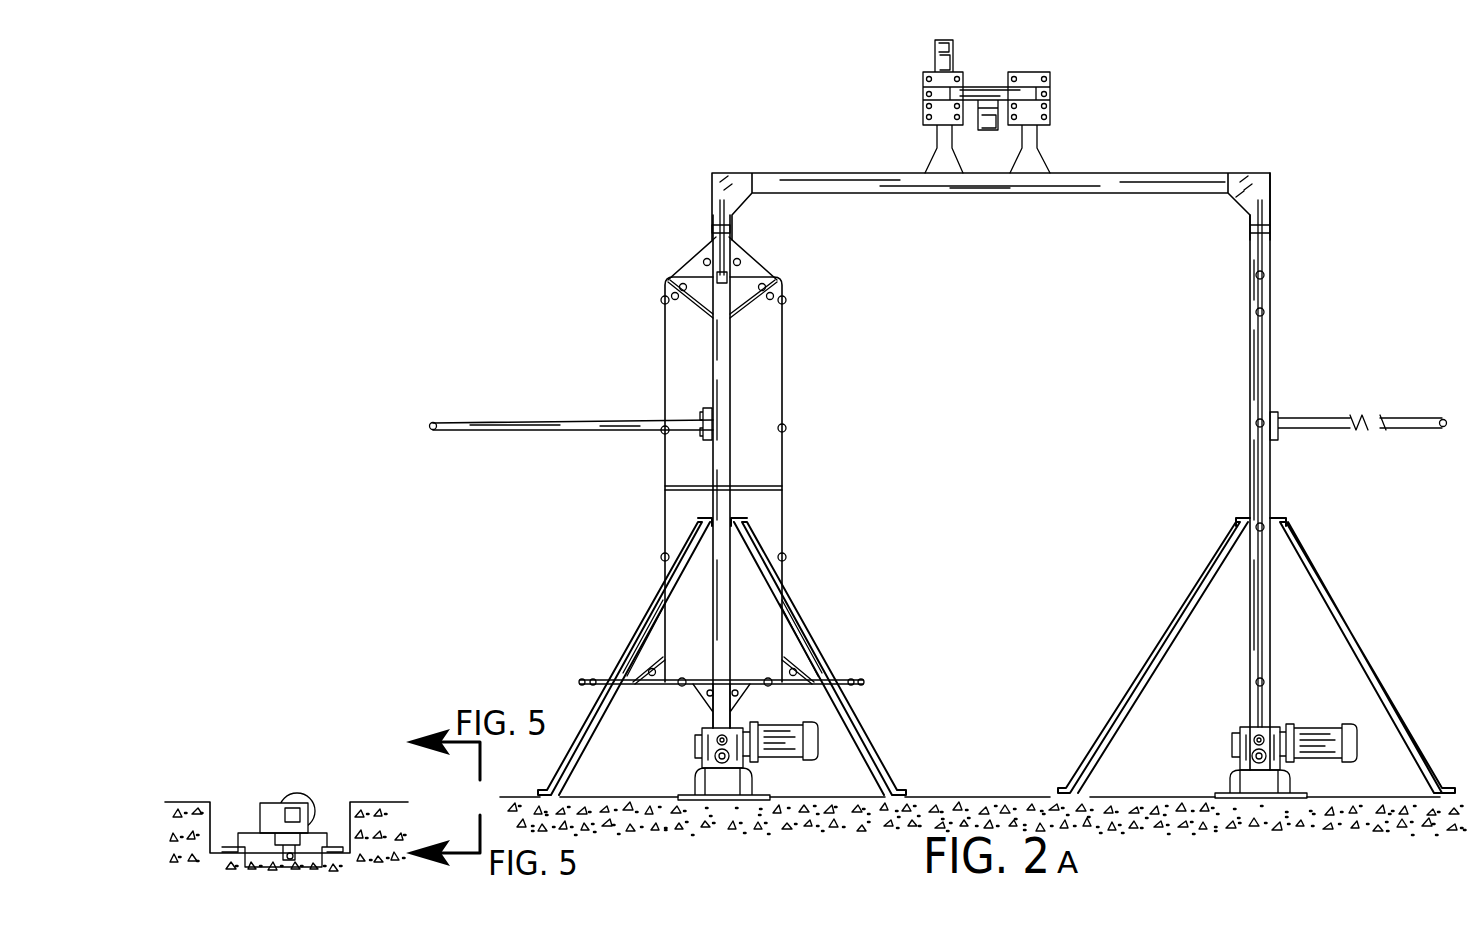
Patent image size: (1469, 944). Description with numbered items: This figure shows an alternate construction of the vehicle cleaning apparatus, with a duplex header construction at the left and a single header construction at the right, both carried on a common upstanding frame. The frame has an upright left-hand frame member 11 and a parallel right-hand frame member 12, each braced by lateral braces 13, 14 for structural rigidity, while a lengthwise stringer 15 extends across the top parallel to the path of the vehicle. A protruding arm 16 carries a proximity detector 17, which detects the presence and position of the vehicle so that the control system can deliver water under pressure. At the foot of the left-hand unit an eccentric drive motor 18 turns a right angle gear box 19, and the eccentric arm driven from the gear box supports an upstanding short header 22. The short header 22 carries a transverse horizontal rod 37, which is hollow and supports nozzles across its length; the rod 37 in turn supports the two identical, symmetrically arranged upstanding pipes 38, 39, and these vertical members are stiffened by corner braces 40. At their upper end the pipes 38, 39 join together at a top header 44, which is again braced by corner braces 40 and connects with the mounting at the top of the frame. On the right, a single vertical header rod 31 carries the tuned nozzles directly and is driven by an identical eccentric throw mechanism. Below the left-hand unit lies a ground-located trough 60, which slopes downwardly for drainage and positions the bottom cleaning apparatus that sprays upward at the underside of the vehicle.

The left-hand frame member 11 is at (722, 383).
The right-hand frame member 12 is at (1270, 503).
The lateral brace 13 is at (596, 735).
The lateral brace 14 is at (875, 762).
The lengthwise stringer 15 is at (876, 178).
The protruding arm 16 is at (597, 422).
The proximity detector 17 is at (433, 432).
The eccentric drive motor 18 is at (815, 742).
The right angle gear box 19 is at (710, 743).
The short header 22 is at (717, 717).
The header rod 31 is at (1272, 354).
The transverse horizontal rod 37 is at (834, 680).
The upstanding pipe 38 is at (665, 514).
The upstanding pipe 39 is at (787, 532).
The corner brace 40 is at (692, 270).
The top header 44 is at (758, 273).
The trough 60 is at (212, 827).